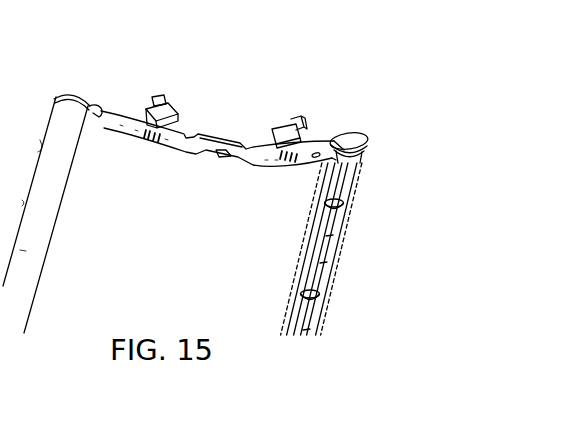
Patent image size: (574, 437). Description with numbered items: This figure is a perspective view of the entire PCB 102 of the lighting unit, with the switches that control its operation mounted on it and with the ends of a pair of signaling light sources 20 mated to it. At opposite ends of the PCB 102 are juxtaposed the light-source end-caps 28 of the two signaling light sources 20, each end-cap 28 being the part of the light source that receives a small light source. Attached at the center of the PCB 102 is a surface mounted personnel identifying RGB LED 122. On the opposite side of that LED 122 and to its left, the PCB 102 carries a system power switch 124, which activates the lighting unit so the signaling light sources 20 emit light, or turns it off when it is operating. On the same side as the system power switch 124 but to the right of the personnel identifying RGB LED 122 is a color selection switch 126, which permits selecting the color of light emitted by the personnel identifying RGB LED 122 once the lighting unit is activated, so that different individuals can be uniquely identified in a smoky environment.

The signaling light source 20 is at (61, 240).
The light-source end-cap 28 is at (87, 115).
The PCB 102 is at (226, 117).
The personnel identifying RGB LED 122 is at (222, 165).
The system power switch 124 is at (143, 83).
The color selection switch 126 is at (307, 103).